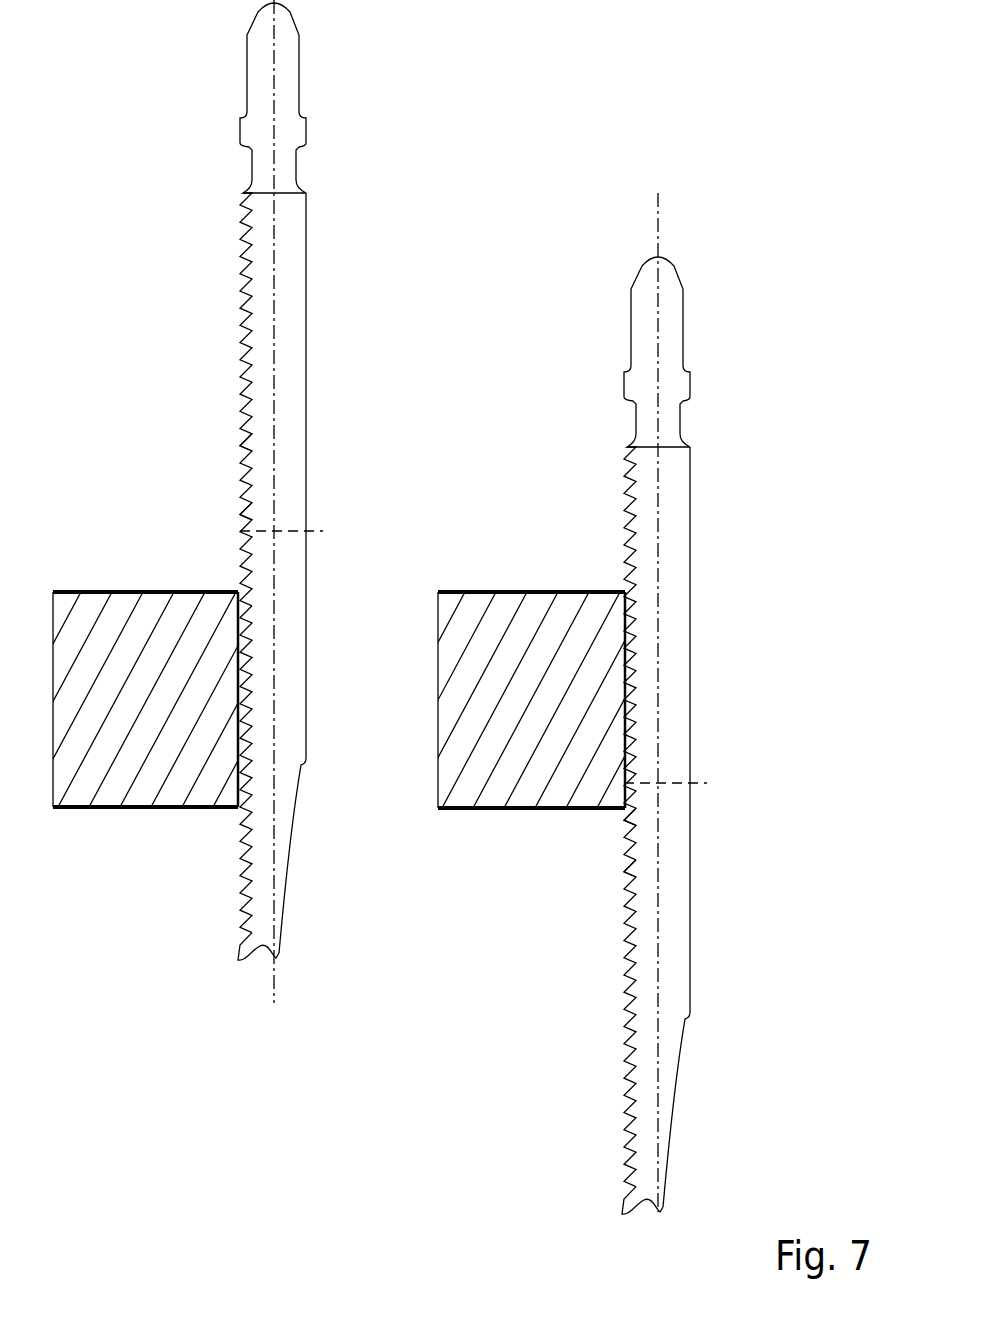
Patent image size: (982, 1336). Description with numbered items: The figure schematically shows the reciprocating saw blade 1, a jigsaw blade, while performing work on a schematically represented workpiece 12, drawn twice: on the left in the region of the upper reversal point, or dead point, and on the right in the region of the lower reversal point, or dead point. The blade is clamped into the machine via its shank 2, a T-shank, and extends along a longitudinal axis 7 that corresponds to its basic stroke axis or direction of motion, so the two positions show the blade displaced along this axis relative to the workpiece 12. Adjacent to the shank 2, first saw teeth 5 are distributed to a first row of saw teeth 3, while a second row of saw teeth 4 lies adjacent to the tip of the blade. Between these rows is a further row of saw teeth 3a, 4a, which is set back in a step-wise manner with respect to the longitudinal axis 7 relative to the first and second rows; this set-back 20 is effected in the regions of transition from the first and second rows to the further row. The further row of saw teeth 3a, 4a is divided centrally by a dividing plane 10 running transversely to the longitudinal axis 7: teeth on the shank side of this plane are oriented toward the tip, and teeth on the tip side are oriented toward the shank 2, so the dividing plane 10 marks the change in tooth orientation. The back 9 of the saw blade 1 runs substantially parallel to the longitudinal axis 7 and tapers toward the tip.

The reciprocating saw blade 1 is at (185, 266).
The shank 2 is at (222, 108).
The first row of saw teeth 3 is at (217, 360).
The further row of saw teeth 3a is at (232, 507).
The second row of saw teeth 4 is at (220, 892).
The further row of saw teeth 4a is at (622, 822).
The first saw teeth 5 is at (262, 963).
The longitudinal axis 7 is at (276, 1003).
The back 9 is at (303, 463).
The dividing plane 10 is at (320, 531).
The workpiece 12 is at (150, 605).
The set-back 20 is at (248, 440).